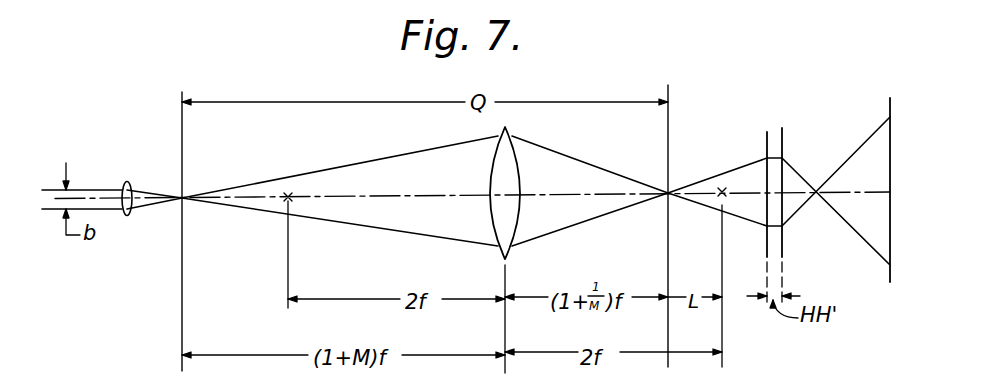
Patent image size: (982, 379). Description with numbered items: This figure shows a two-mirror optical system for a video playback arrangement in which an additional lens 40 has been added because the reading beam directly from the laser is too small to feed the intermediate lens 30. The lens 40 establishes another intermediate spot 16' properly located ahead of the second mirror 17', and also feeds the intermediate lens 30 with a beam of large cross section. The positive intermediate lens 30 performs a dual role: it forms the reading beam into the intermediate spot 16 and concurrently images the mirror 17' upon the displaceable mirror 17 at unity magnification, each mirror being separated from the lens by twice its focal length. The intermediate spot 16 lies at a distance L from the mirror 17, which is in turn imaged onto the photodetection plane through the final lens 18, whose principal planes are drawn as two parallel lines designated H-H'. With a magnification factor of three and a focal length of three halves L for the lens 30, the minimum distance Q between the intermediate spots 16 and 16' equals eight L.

The lens 40 is at (131, 182).
The intermediate spot 16' is at (208, 231).
The second mirror 17' is at (311, 222).
The intermediate lens 30 is at (518, 160).
The intermediate spot 16 is at (690, 226).
The displaceable mirror 17 is at (735, 247).
The final lens 18 is at (784, 140).